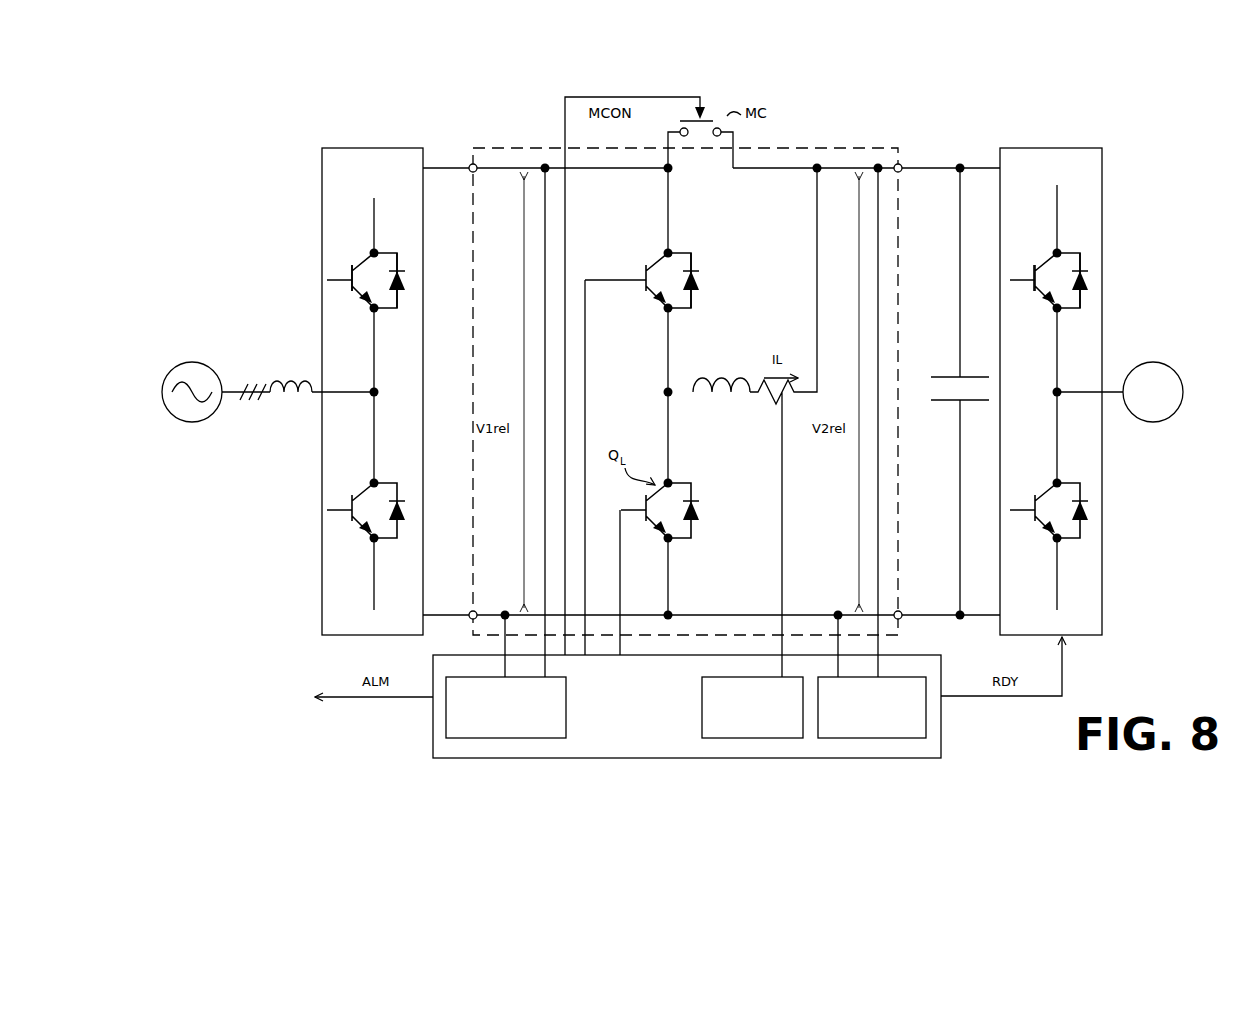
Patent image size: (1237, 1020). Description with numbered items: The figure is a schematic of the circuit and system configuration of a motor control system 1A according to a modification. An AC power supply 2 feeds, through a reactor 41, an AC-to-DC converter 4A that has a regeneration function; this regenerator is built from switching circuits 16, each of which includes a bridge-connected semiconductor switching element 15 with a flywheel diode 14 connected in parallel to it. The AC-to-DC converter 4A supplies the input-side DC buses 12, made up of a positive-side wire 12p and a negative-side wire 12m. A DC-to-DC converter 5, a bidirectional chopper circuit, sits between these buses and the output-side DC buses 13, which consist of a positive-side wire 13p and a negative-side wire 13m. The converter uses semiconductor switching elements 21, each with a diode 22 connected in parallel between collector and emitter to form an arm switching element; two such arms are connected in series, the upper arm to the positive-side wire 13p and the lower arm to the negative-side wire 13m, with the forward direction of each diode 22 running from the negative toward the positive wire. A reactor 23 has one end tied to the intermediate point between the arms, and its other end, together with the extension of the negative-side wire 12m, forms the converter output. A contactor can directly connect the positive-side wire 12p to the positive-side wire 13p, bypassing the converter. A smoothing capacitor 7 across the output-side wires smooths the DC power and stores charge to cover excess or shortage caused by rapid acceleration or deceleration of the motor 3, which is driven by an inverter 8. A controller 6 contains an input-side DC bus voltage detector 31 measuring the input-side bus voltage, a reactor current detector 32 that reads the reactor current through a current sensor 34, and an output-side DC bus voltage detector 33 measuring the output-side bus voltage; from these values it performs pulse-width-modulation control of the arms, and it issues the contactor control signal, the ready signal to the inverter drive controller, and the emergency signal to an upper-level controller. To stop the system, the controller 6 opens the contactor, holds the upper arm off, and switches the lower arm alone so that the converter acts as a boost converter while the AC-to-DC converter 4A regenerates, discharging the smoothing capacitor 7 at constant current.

The motor control system 1A is at (1124, 162).
The AC power supply 2 is at (192, 362).
The motor 3 is at (1155, 362).
The AC-to-DC converter 4A is at (320, 190).
The DC-to-DC converter 5 is at (538, 147).
The controller 6 is at (944, 731).
The smoothing capacitor 7 is at (970, 377).
The inverter 8 is at (1104, 210).
The input-side DC buses 12 is at (381, 92).
The positive-side wire 12p is at (473, 163).
The negative-side wire 12m is at (473, 612).
The output-side DC buses 13 is at (997, 92).
The positive-side wire 13p is at (898, 164).
The negative-side wire 13m is at (898, 612).
The flywheel diode 14 is at (402, 264).
The semiconductor switching element 15 is at (350, 275).
The switching circuit 16 is at (361, 247).
The semiconductor switching element 21 is at (643, 274).
The diode 22 is at (697, 268).
The reactor 23 is at (715, 376).
The input-side DC bus voltage detector 31 is at (447, 717).
The reactor current detector 32 is at (702, 715).
The output-side DC bus voltage detector 33 is at (926, 691).
The current sensor 34 is at (766, 396).
The reactor 41 is at (290, 378).